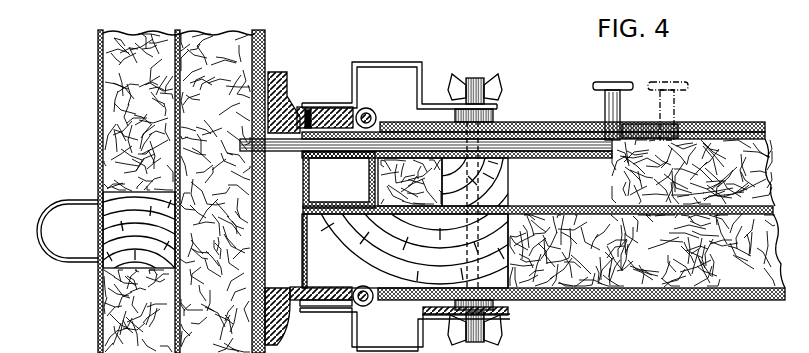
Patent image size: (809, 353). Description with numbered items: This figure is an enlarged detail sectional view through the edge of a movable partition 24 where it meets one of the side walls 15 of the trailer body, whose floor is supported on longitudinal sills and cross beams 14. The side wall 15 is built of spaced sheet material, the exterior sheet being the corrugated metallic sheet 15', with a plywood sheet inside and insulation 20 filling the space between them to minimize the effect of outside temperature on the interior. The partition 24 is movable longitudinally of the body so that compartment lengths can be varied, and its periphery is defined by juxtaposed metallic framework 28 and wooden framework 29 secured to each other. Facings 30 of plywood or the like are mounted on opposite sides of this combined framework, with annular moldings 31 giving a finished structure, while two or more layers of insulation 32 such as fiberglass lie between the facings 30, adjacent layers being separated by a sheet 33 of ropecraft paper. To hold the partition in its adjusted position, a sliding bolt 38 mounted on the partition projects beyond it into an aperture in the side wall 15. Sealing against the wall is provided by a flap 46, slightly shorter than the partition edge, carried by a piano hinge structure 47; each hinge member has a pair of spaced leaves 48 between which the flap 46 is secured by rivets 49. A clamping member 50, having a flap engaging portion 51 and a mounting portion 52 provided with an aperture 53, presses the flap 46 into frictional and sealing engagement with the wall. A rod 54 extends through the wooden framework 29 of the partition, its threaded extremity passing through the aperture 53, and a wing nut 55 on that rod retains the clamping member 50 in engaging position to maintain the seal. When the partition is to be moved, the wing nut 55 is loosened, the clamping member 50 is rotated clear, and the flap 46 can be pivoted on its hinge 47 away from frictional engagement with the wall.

The cross beams 14 is at (441, 8).
The side walls 15 is at (143, 191).
The corrugated exterior sheet 15' is at (57, 219).
The insulation 20 is at (222, 30).
The partition 24 is at (704, 122).
The metallic framework 28 is at (310, 180).
The wooden framework 29 is at (306, 228).
The facings 30 is at (600, 126).
The annular moldings 31 is at (302, 172).
The insulation 32 is at (766, 213).
The sheet of ropecraft paper 33 is at (628, 206).
The sliding bolt 38 is at (243, 152).
The flap 46 is at (284, 78).
The piano hinge structure 47 is at (370, 110).
The leaves 48 is at (310, 108).
The rivets 49 is at (300, 128).
The clamping member 50 is at (406, 62).
The flap engaging portion 51 is at (340, 104).
The mounting portion 52 is at (494, 112).
The aperture 53 is at (496, 310).
The rod 54 is at (464, 260).
The wing nut 55 is at (494, 80).